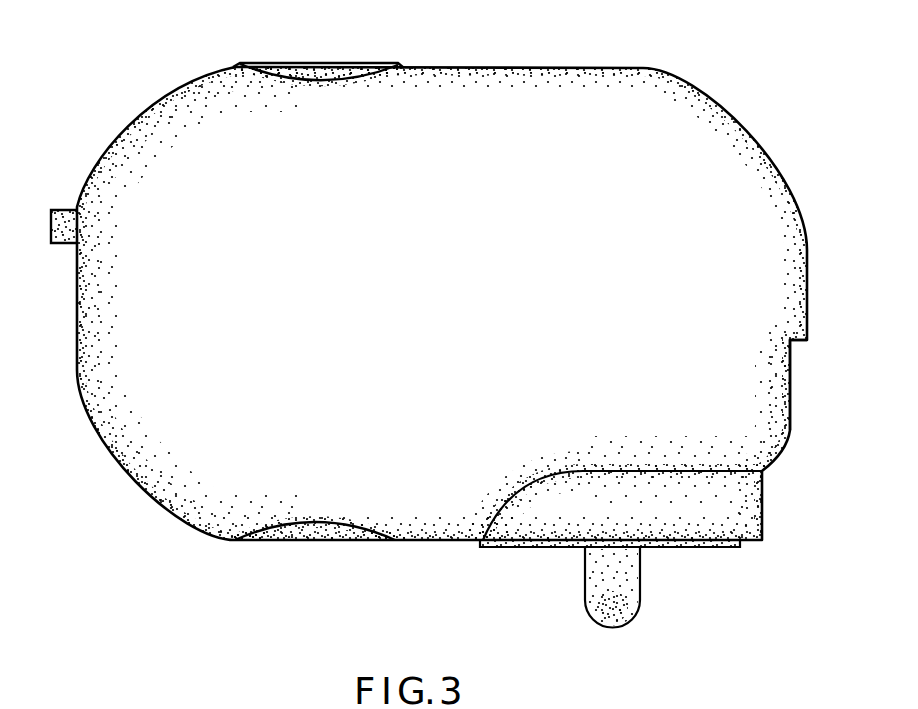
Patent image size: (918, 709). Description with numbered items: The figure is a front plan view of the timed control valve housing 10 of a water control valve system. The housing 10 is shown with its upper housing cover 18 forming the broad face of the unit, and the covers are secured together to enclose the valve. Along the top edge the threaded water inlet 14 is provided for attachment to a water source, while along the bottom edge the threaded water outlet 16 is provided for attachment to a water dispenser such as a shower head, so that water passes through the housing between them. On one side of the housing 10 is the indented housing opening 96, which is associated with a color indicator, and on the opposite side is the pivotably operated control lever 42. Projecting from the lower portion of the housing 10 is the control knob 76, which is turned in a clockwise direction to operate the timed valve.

The timed control valve housing 10 is at (141, 57).
The water inlet 14 is at (300, 66).
The water outlet 16 is at (382, 541).
The upper housing cover 18 is at (464, 259).
The control lever 42 is at (51, 227).
The indented housing opening 96 is at (796, 343).
The control knob 76 is at (641, 573).